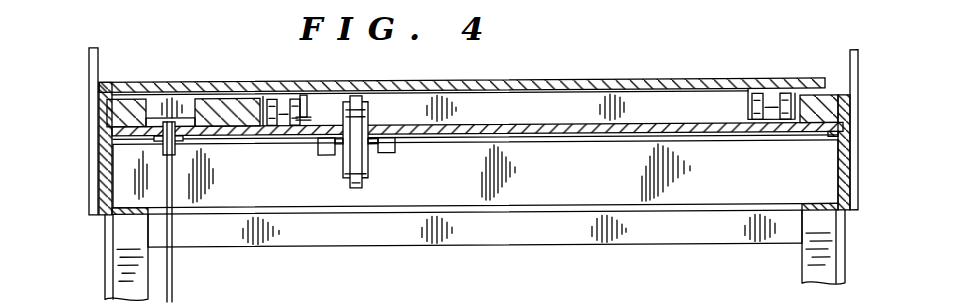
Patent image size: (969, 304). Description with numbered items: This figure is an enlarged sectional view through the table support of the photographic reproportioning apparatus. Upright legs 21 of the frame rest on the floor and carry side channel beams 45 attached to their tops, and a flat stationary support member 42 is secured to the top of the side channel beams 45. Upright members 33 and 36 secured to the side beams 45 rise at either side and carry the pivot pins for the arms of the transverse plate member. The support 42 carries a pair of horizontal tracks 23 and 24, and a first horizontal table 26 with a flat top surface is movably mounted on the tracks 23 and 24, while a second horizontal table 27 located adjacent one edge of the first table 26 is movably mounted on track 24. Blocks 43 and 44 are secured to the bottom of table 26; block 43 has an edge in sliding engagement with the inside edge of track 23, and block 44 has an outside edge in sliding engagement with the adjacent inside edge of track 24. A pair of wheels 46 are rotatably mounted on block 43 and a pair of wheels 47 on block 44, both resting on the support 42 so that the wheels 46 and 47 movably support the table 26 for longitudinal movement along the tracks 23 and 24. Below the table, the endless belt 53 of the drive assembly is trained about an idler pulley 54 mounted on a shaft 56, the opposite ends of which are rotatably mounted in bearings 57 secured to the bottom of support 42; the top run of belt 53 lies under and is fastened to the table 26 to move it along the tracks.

The upright legs 21 is at (110, 265).
The track 23 is at (823, 117).
The track 24 is at (245, 116).
The first horizontal table 26 is at (700, 84).
The second horizontal table 27 is at (202, 88).
The upright member 33 is at (858, 68).
The upright member 36 is at (88, 63).
The stationary support member 42 is at (534, 133).
The block 43 is at (748, 109).
The block 44 is at (301, 117).
The side channel beams 45 is at (115, 192).
The wheels 46 is at (785, 98).
The wheels 47 is at (268, 100).
The endless belt 53 is at (360, 192).
The idler pulley 54 is at (345, 181).
The shaft 56 is at (373, 152).
The bearings 57 is at (325, 159).